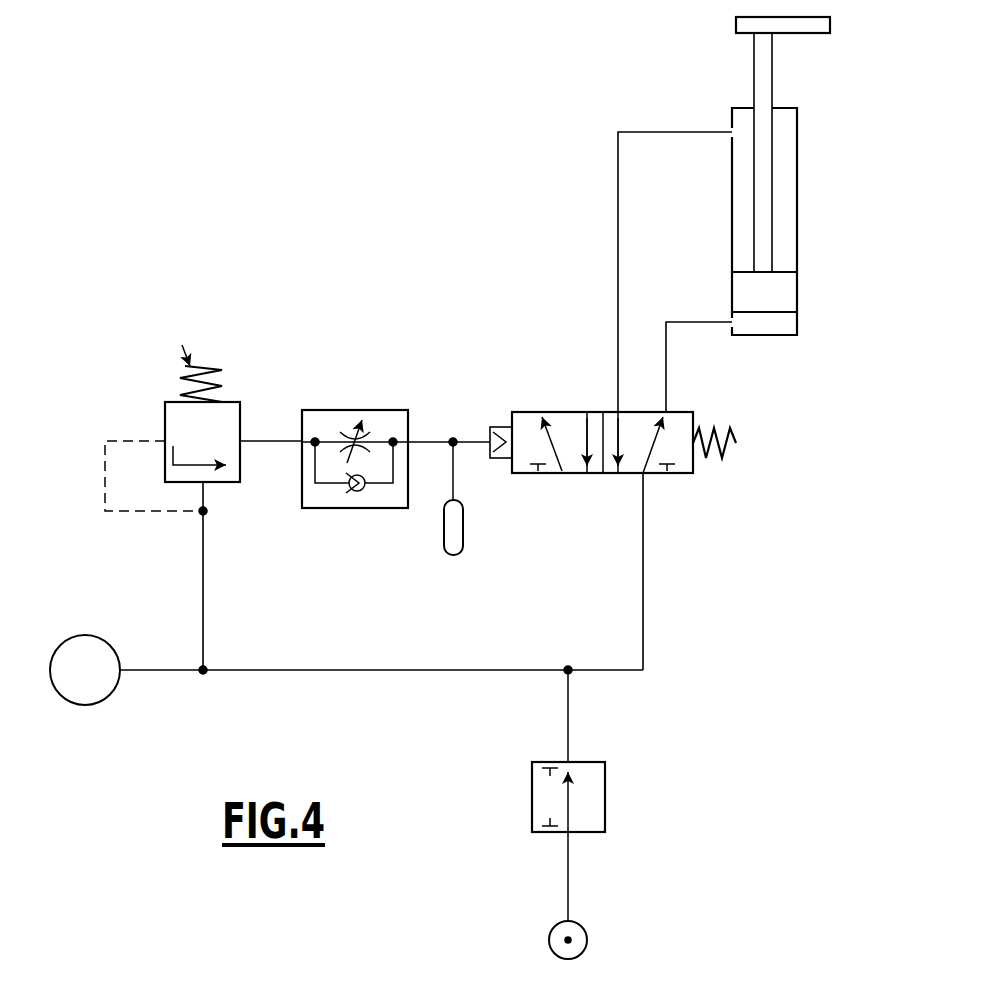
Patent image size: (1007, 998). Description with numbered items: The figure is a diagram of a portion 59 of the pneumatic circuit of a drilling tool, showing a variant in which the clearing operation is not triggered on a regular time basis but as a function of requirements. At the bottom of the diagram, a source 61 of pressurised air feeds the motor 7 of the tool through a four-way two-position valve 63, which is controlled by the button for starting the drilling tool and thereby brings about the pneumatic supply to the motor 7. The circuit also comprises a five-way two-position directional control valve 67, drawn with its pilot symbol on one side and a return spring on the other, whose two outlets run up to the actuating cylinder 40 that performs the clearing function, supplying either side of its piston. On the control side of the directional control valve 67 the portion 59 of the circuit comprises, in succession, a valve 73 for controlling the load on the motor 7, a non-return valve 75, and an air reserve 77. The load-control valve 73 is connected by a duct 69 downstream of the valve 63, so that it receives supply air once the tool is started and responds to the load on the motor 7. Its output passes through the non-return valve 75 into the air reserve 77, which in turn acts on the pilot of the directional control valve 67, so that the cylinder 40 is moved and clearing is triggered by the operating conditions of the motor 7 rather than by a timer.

The motor 7 is at (96, 637).
The cylinder 40 is at (807, 178).
The portion of the pneumatic circuit 59 is at (477, 290).
The source of pressurised air 61 is at (588, 930).
The four-way two-position valve 63 is at (528, 795).
The five-way two-position directional control valve 67 is at (546, 400).
The duct 69 is at (203, 585).
The valve for controlling the load on the motor 73 is at (243, 392).
The non-return valve 75 is at (358, 395).
The air reserve 77 is at (452, 532).